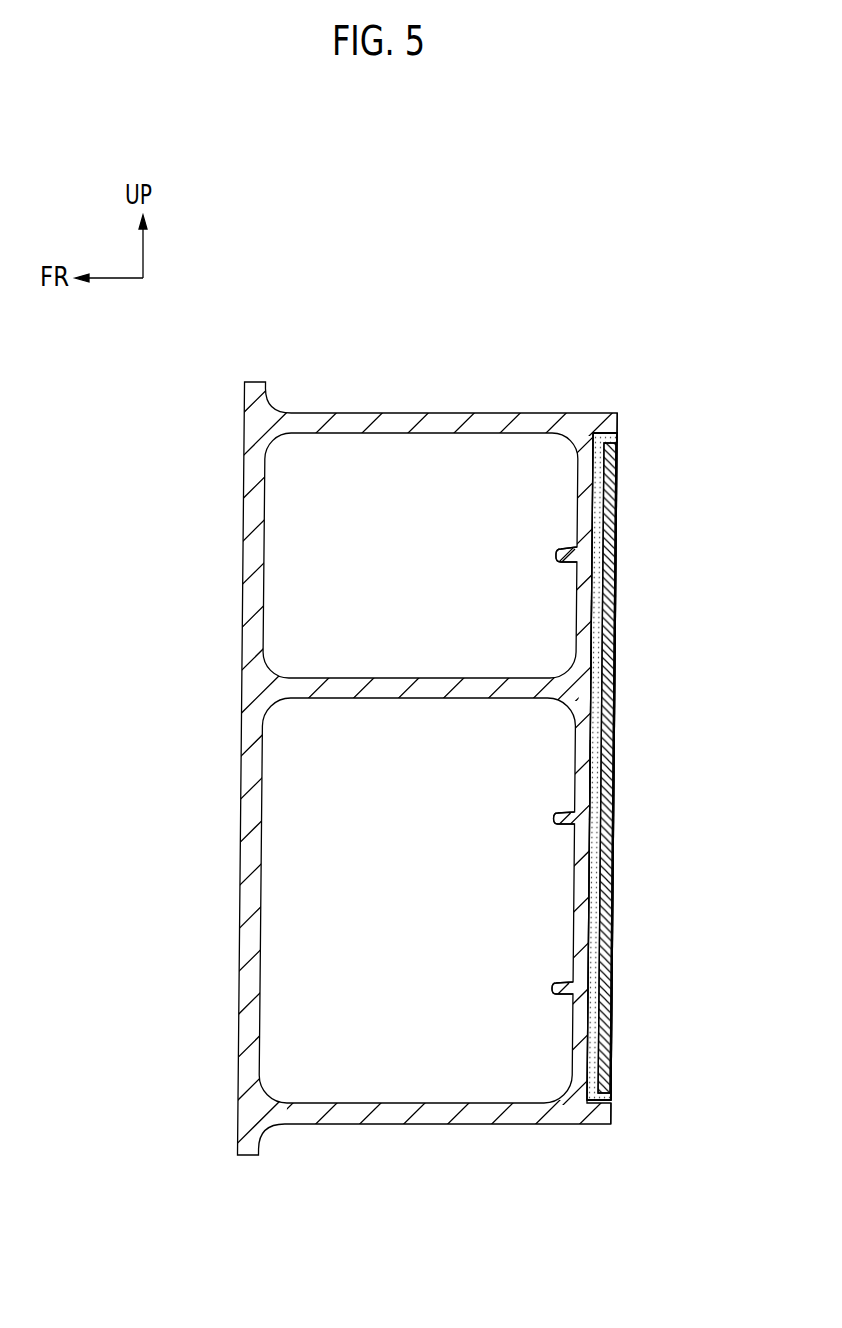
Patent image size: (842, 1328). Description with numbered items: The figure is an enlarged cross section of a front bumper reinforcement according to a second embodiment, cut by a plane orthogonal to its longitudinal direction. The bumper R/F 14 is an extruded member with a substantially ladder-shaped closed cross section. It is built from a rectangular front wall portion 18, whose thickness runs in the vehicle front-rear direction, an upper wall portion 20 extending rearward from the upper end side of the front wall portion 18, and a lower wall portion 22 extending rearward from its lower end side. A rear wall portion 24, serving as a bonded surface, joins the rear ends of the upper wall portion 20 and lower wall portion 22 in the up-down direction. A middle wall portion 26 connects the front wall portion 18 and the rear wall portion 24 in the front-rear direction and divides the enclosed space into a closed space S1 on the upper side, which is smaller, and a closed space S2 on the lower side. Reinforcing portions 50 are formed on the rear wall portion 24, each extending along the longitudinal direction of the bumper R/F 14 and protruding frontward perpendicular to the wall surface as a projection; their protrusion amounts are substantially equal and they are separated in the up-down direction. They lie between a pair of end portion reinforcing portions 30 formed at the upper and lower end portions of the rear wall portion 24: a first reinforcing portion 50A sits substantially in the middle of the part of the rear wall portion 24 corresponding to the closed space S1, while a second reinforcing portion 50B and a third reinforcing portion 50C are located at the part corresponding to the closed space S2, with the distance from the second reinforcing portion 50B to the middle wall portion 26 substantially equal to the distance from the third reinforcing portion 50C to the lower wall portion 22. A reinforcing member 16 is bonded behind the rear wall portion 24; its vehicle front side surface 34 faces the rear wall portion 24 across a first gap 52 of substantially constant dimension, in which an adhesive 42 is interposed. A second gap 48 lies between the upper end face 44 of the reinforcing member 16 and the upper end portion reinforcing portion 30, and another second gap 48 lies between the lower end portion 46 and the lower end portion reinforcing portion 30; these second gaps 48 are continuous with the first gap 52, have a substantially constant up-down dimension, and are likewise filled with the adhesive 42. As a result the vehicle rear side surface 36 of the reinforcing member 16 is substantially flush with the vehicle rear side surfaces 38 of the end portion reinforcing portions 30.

The bumper R/F 14 is at (585, 378).
The reinforcing member 16 is at (664, 769).
The front wall portion 18 is at (241, 775).
The upper wall portion 20 is at (399, 413).
The lower wall portion 22 is at (399, 1124).
The rear wall portion 24 is at (580, 780).
The middle wall portion 26 is at (424, 698).
The end portion reinforcing portion 30 is at (608, 413).
The vehicle front side surface 34 is at (614, 640).
The vehicle rear side surface 36 is at (612, 777).
The vehicle rear side surface 38 is at (617, 432).
The adhesive 42 is at (615, 488).
The upper end face 44 is at (615, 448).
The lower end portion 46 is at (612, 1110).
The second gap 48 is at (620, 441).
The reinforcing portion 50 is at (518, 757).
The first reinforcing portion 50A is at (557, 550).
The second reinforcing portion 50B is at (556, 823).
The third reinforcing portion 50C is at (555, 990).
The first gap 52 is at (615, 527).
The closed space S1 is at (434, 560).
The closed space S2 is at (433, 887).